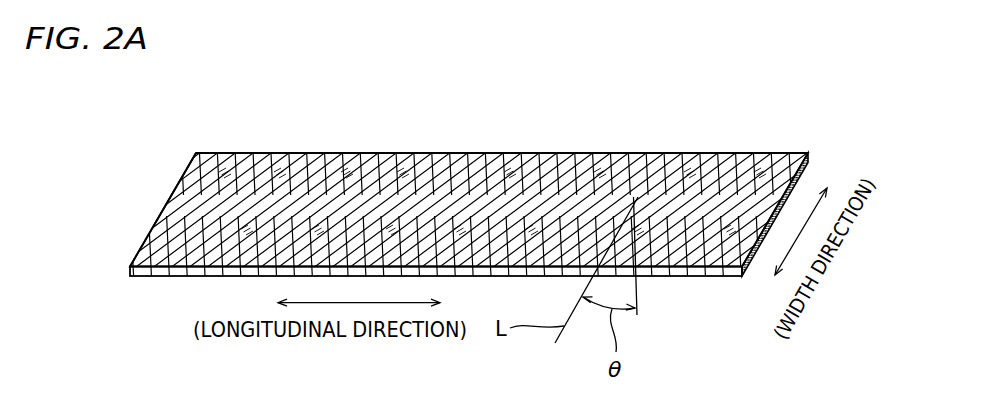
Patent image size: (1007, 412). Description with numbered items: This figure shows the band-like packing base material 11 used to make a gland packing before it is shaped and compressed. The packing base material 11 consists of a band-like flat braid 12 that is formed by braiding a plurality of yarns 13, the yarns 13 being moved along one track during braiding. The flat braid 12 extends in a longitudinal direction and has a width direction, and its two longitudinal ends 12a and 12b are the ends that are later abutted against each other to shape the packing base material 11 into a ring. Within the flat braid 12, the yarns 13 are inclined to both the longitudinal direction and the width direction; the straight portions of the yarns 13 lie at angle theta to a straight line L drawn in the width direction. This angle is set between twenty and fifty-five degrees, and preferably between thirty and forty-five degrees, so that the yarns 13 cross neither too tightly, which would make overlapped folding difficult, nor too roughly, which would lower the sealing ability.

The packing base material 11 is at (463, 153).
The flat braid 12 is at (580, 173).
The longitudinal end 12a is at (789, 198).
The longitudinal end 12b is at (165, 203).
The yarns 13 is at (195, 238).